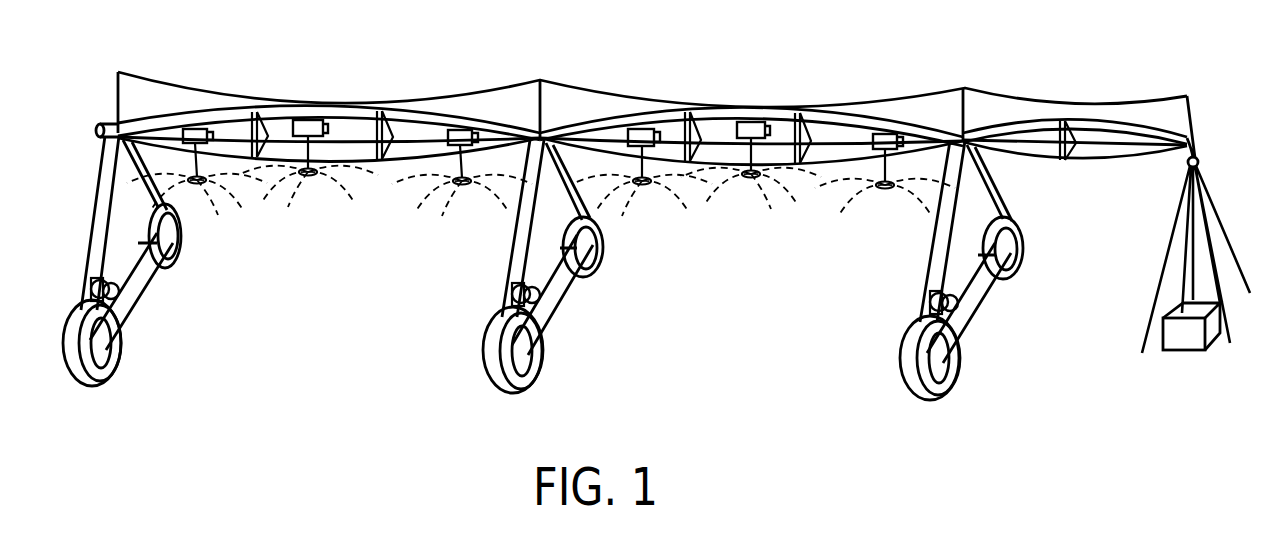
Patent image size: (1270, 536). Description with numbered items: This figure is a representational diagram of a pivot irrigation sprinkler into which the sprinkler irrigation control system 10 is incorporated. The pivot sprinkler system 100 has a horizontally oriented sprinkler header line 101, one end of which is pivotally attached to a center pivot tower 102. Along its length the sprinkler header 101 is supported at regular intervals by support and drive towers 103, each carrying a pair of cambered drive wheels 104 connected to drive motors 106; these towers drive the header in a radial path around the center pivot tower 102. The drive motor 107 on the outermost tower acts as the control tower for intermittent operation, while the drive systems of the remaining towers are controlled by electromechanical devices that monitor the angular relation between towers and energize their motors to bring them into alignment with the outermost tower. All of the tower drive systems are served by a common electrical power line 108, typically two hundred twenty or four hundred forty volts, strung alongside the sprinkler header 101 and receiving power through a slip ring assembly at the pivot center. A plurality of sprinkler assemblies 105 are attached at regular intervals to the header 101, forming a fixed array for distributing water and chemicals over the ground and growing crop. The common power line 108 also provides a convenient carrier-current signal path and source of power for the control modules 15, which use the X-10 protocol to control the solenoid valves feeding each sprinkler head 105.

The pivot sprinkler system 100 is at (686, 293).
The sprinkler header line 101 is at (433, 120).
The center pivot tower 102 is at (1198, 197).
The support and drive towers 103 is at (89, 283).
The drive wheels 104 is at (113, 362).
The sprinkler assemblies 105 is at (460, 193).
The drive motors 106 is at (511, 279).
The drive motor 107 is at (121, 315).
The common electrical power line 108 is at (302, 100).
The control modules 15 is at (193, 128).
The sprinkler irrigation control system 10 is at (1191, 347).